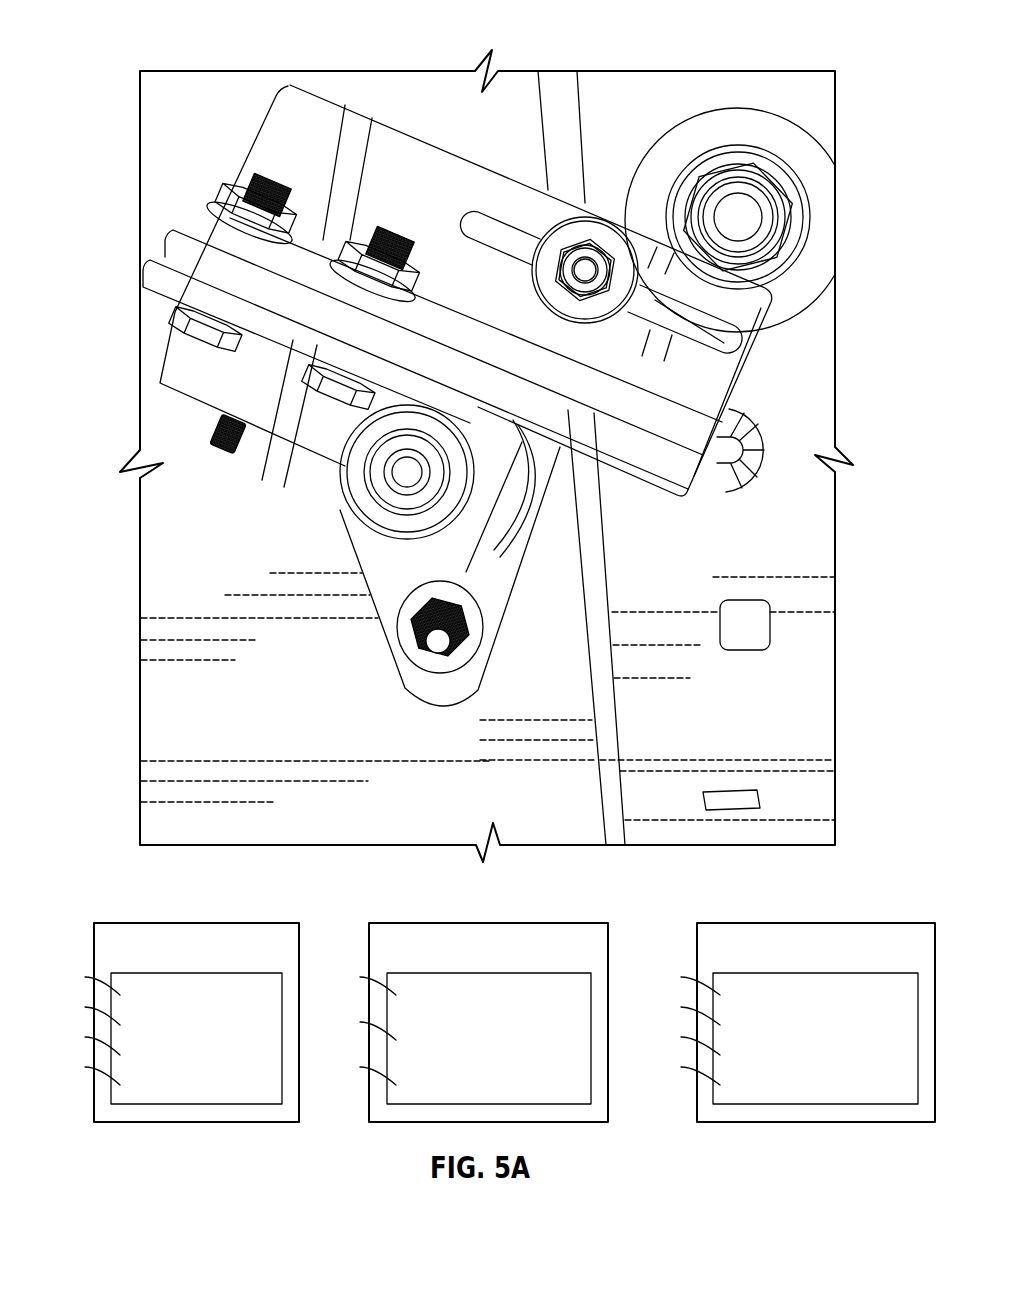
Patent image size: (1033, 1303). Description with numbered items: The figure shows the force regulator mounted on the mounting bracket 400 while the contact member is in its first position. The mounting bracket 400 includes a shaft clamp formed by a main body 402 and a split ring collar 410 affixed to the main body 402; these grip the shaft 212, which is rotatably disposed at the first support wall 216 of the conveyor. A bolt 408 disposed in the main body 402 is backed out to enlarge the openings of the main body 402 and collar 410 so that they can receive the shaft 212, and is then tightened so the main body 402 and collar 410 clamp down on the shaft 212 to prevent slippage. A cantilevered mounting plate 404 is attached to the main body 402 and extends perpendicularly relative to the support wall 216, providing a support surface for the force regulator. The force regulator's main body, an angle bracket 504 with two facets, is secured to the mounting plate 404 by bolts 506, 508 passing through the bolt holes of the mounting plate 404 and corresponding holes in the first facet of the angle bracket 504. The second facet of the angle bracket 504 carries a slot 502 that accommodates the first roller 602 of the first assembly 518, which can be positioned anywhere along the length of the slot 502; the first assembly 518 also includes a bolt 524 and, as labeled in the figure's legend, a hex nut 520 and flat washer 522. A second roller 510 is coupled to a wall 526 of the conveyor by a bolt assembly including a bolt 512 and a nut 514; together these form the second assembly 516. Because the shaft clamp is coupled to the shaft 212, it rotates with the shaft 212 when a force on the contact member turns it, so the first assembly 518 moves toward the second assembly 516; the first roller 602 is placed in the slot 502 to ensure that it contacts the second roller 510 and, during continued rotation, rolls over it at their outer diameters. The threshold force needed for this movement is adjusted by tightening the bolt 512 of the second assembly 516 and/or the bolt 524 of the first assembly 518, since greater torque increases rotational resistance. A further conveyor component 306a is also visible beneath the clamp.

The first support wall 216 is at (190, 90).
The wall 526 is at (621, 93).
The slot 502 is at (512, 246).
The angle bracket 504 is at (182, 246).
The bolt 506 is at (266, 183).
The bolt 508 is at (390, 240).
The second roller 510 is at (823, 185).
The bolt 512 is at (743, 210).
The nut 514 is at (747, 200).
The second assembly 516 is at (437, 923).
The first assembly 518 is at (160, 923).
The hex nut 520 is at (554, 282).
The flat washer 522 is at (590, 306).
The bolt 524 is at (583, 262).
The first roller 602 is at (530, 252).
The mounting bracket 400 is at (765, 923).
The main body 402 is at (258, 455).
The mounting plate 404 is at (153, 290).
The bolt 408 is at (214, 430).
The split ring collar 410 is at (353, 448).
The shaft 212 is at (404, 473).
The bracket arm 306a is at (398, 602).